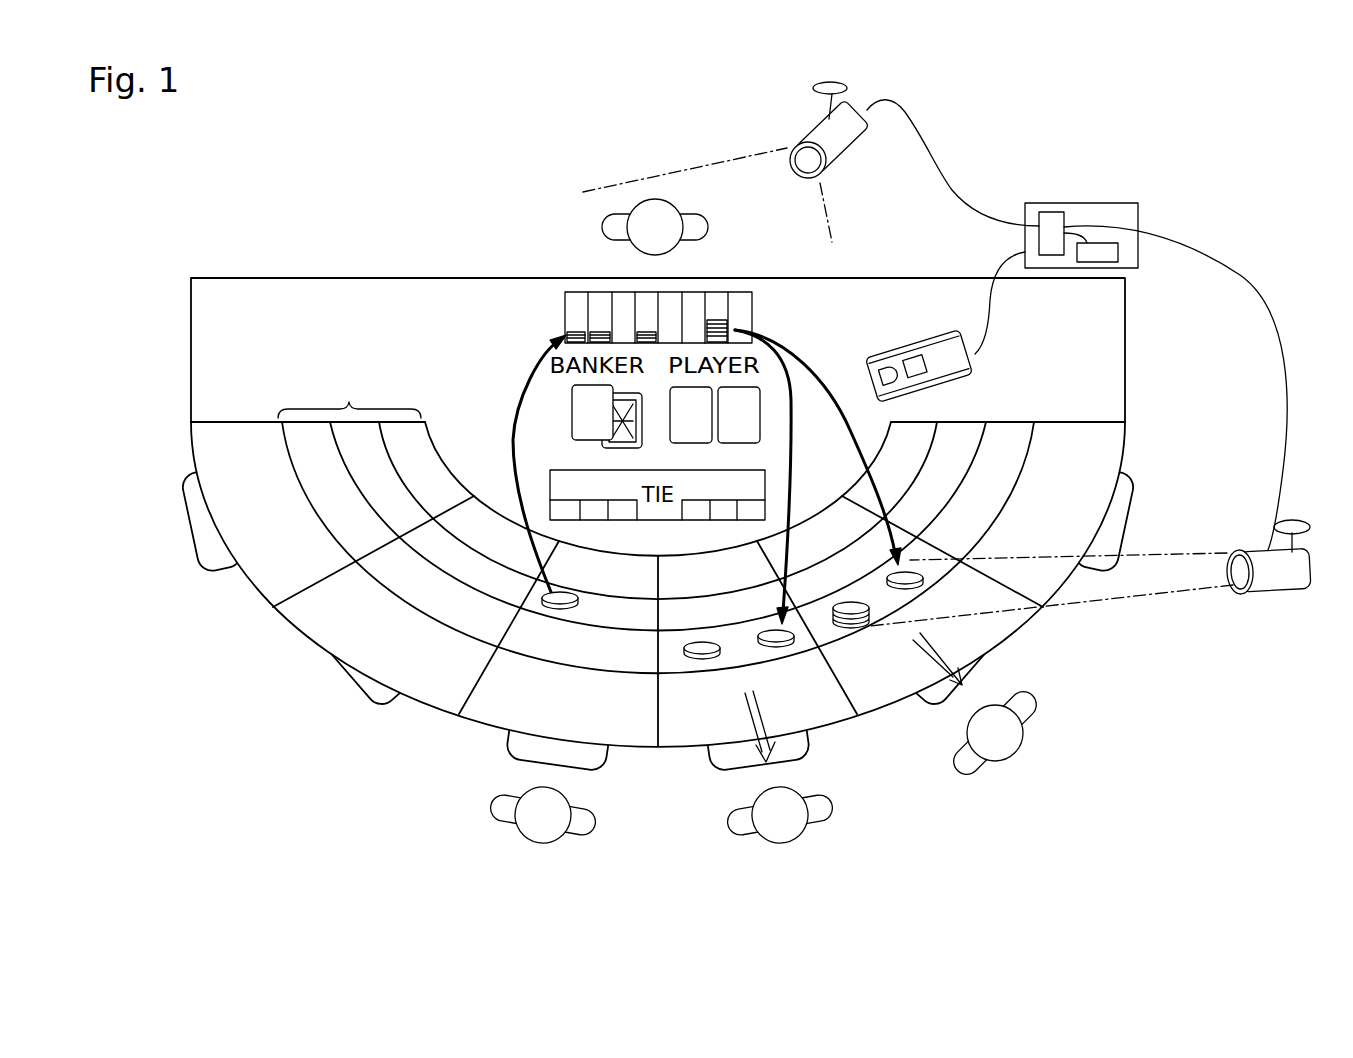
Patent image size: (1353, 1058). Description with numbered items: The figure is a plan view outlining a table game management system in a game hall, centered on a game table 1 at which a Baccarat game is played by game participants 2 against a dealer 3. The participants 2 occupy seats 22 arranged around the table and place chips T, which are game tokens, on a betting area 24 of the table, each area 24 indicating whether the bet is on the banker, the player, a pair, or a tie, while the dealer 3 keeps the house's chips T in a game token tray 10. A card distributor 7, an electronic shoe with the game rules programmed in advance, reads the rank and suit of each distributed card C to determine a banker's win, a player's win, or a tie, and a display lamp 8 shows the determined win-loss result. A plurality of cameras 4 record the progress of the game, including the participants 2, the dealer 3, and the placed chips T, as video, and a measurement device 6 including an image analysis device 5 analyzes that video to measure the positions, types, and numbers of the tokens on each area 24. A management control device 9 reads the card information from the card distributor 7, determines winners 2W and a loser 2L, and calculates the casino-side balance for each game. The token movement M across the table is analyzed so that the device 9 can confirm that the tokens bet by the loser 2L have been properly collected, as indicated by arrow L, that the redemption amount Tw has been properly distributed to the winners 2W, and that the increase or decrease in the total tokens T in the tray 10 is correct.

The game table 1 is at (1132, 342).
The game participant 2 is at (763, 780).
The loser 2L is at (505, 813).
The winner 2W is at (817, 813).
The dealer 3 is at (677, 196).
The camera 4 is at (820, 134).
The image analysis device 5 is at (1049, 212).
The measurement device 6 is at (1120, 254).
The card distributor 7 is at (942, 330).
The display lamp 8 is at (923, 375).
The management control device 9 is at (1093, 210).
The game token tray 10 is at (598, 296).
The player seat 22 is at (205, 545).
The area 24 is at (365, 454).
The chips T is at (642, 297).
The redemption amount Tw is at (790, 645).
The card C is at (572, 425).
The chip movement M is at (750, 717).
The arrow L is at (518, 412).